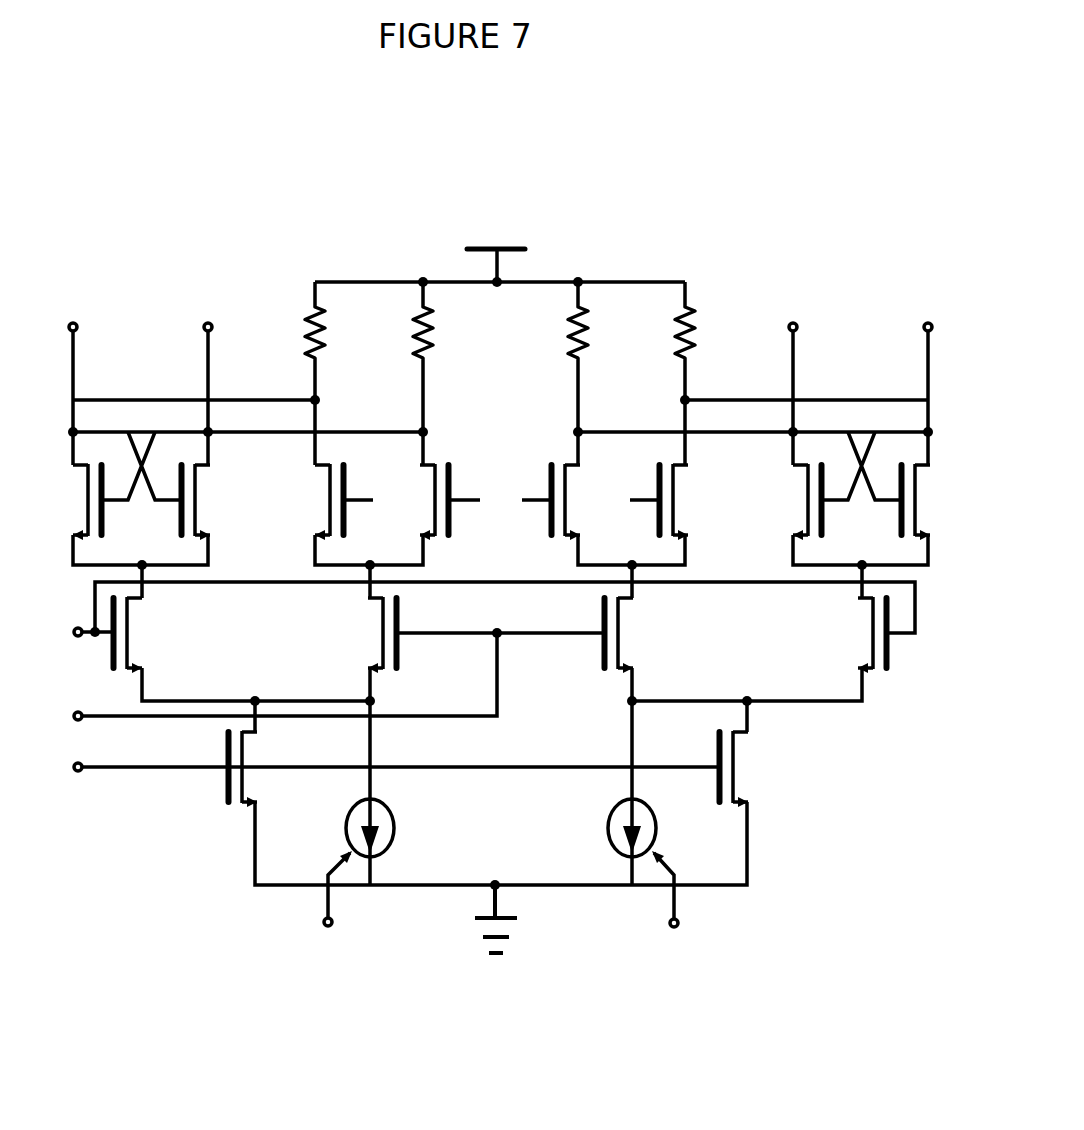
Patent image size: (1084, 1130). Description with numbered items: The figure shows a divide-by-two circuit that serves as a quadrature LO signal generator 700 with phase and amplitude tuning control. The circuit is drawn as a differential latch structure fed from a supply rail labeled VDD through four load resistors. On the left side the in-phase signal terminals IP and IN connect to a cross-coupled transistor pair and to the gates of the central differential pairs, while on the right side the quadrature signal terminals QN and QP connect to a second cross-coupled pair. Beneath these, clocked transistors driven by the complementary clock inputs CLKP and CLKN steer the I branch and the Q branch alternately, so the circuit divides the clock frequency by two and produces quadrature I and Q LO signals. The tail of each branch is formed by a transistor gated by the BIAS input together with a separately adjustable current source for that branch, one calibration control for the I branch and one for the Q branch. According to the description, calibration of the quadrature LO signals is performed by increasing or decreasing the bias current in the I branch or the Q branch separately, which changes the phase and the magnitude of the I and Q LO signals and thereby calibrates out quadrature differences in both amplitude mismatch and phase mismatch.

The quadrature LO signal generator 700 is at (640, 230).
The supply voltage terminal VDD is at (499, 250).
The positive I input terminal IP is at (73, 369).
The negative I input terminal IN is at (208, 369).
The negative Q output terminal QN is at (793, 369).
The positive Q output terminal QP is at (928, 370).
The positive clock input CLKP is at (483, 624).
The negative clock input CLKN is at (272, 692).
The bias input BIAS is at (387, 783).